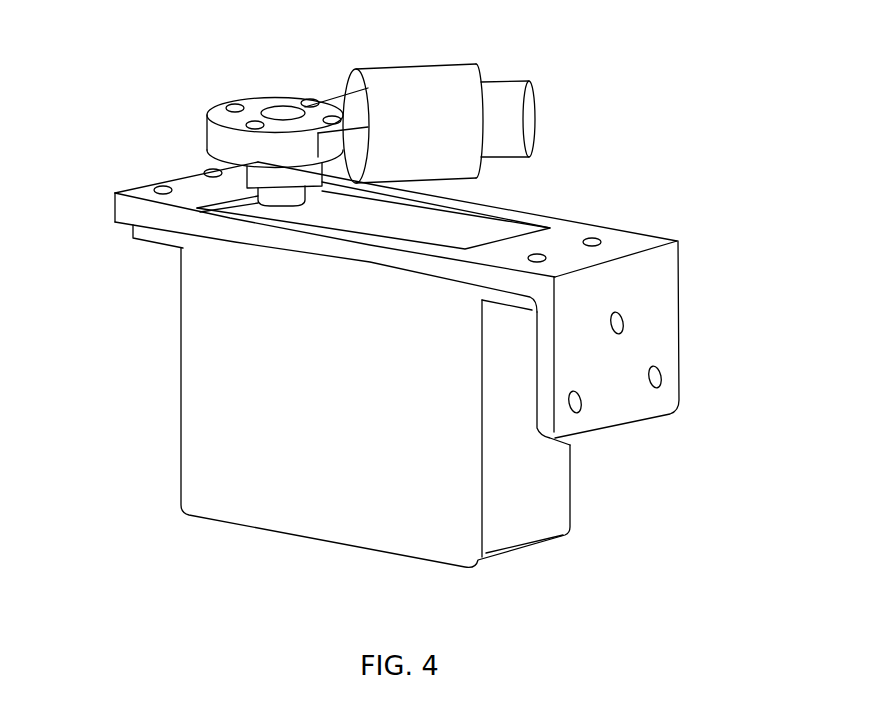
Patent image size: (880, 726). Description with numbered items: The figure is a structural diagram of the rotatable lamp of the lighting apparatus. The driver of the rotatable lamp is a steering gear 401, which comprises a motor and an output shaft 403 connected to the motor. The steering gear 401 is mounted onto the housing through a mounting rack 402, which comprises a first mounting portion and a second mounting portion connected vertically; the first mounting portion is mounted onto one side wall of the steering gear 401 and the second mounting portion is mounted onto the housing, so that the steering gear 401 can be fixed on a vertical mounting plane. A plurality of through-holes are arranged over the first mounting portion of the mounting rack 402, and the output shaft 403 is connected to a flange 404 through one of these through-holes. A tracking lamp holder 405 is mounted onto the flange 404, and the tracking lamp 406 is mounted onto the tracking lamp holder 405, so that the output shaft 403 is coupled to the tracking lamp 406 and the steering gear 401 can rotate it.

The steering gear 401 is at (227, 482).
The mounting rack 402 is at (622, 328).
The output shaft 403 is at (258, 190).
The flange 404 is at (207, 118).
The tracking lamp holder 405 is at (382, 81).
The tracking lamp 406 is at (497, 127).